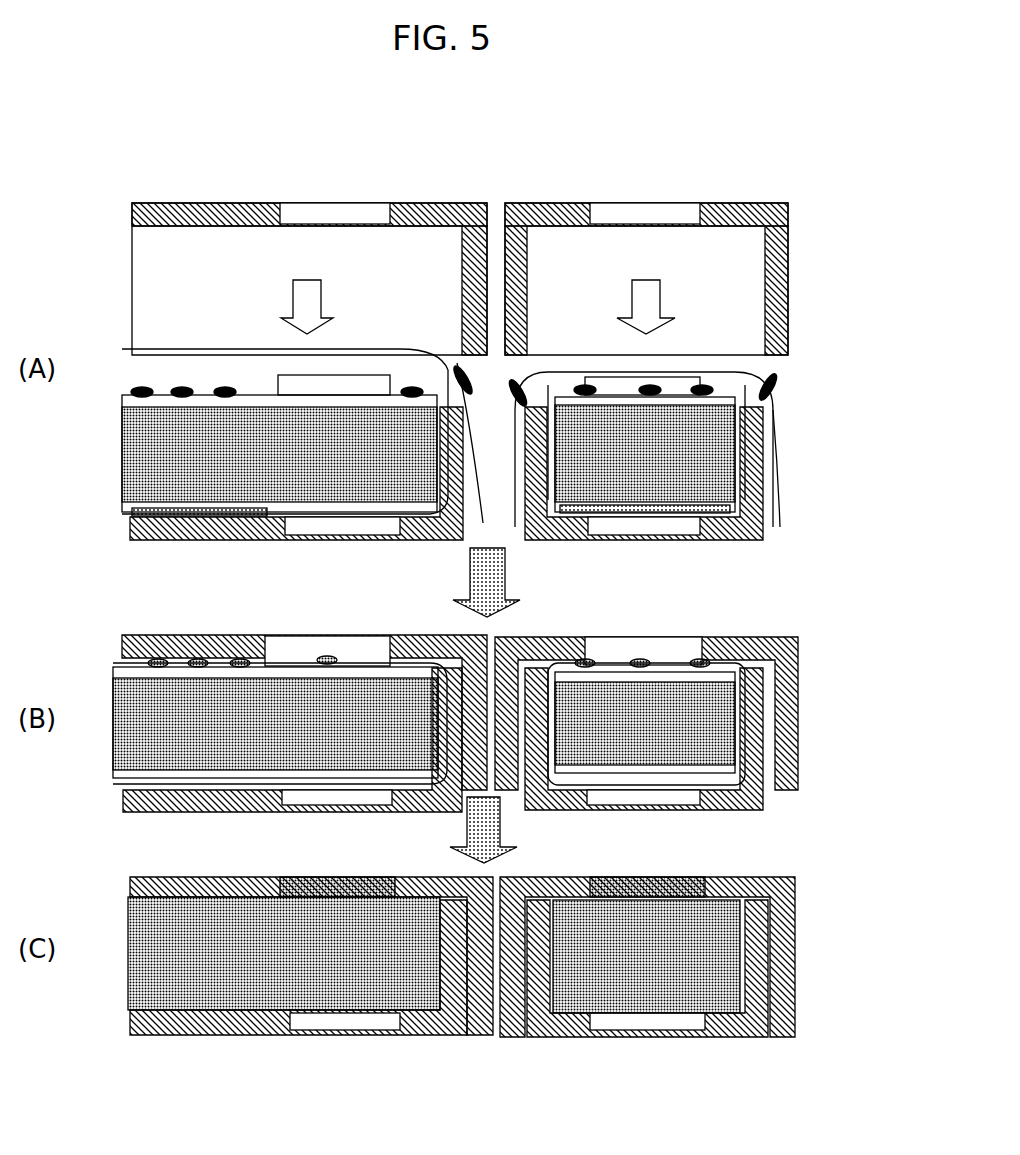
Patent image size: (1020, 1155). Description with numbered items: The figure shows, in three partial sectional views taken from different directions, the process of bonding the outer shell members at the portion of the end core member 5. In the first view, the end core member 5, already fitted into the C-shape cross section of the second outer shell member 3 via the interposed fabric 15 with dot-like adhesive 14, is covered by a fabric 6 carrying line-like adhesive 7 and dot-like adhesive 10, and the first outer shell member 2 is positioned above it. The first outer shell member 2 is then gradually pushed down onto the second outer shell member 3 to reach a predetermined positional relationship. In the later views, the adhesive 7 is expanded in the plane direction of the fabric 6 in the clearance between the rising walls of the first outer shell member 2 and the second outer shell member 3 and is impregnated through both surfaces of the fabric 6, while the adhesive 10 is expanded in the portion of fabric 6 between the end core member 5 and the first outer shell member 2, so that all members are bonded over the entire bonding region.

The first outer shell member 2 is at (452, 200).
The second outer shell member 3 is at (180, 540).
The end core member 5 is at (173, 435).
The fabric 6 is at (470, 466).
The adhesive 7 is at (476, 378).
The adhesive 10 is at (228, 390).
The adhesive 14 is at (237, 540).
The fabric 15 is at (445, 362).